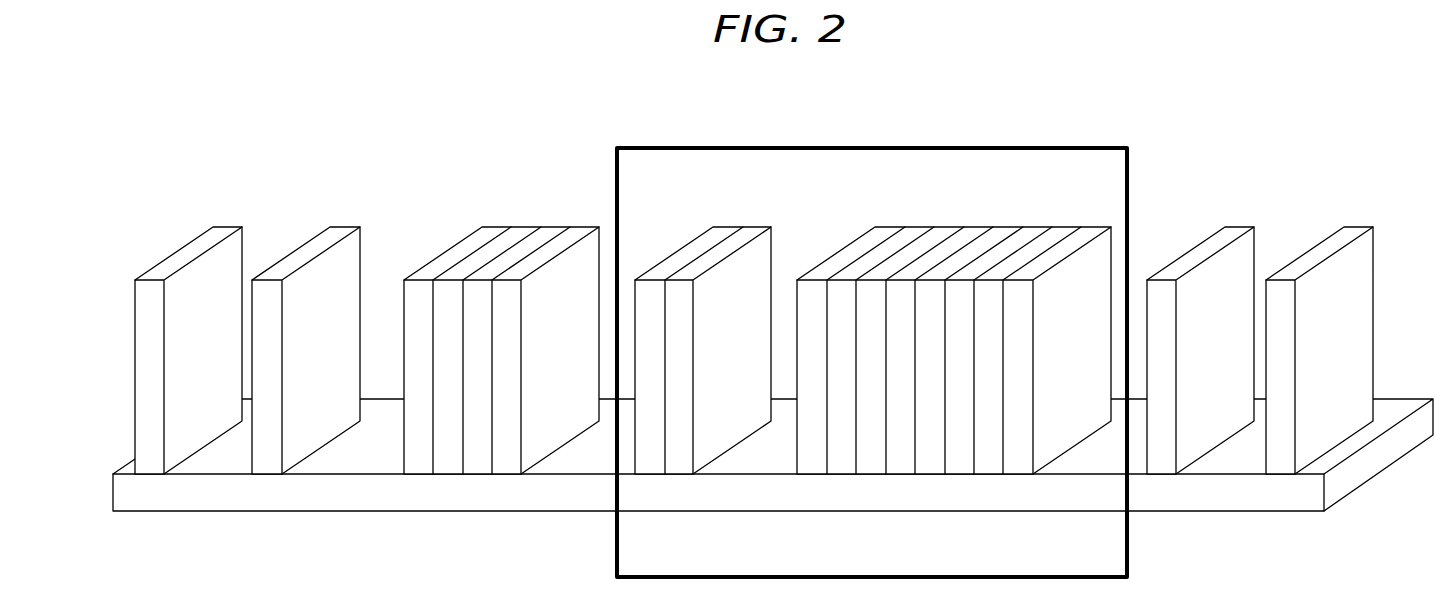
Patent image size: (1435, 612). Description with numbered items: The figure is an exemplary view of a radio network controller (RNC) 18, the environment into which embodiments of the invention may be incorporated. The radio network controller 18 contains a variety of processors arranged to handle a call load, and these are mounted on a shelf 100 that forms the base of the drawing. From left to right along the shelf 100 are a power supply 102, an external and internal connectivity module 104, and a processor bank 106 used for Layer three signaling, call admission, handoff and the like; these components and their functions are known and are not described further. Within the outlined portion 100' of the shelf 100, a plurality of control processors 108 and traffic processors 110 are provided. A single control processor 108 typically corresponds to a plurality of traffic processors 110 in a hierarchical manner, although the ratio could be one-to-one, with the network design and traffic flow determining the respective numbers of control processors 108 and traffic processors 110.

The radio network controller 18 is at (901, 108).
The shelf 100 is at (773, 484).
The portion of the shelf 100' is at (872, 342).
The power supply 102 is at (150, 456).
The external and internal connectivity module 104 is at (267, 456).
The processor bank 106 is at (449, 455).
The control processor 108 is at (678, 456).
The traffic processor 110 is at (927, 456).